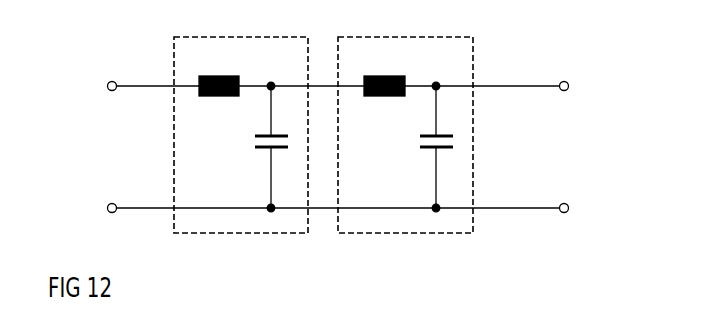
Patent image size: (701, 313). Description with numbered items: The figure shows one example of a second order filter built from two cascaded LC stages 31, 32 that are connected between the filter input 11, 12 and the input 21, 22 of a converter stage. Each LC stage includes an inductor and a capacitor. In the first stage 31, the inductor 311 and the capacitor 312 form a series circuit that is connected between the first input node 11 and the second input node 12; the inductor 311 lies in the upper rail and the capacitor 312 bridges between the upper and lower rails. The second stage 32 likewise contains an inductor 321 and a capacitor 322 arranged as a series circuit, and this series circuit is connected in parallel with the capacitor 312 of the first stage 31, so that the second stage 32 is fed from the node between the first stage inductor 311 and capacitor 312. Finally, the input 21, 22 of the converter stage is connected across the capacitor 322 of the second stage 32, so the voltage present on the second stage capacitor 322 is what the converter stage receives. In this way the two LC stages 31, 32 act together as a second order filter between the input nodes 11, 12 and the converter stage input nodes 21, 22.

The first input node 11 is at (107, 83).
The second input node 12 is at (107, 212).
The converter stage input node 21 is at (570, 83).
The converter stage input node 22 is at (570, 212).
The first LC stage 31 is at (242, 36).
The inductor of the first stage 311 is at (219, 76).
The capacitor of the first stage 312 is at (253, 142).
The second LC stage 32 is at (408, 36).
The inductor of the second stage 321 is at (385, 76).
The capacitor of the second stage 322 is at (420, 142).